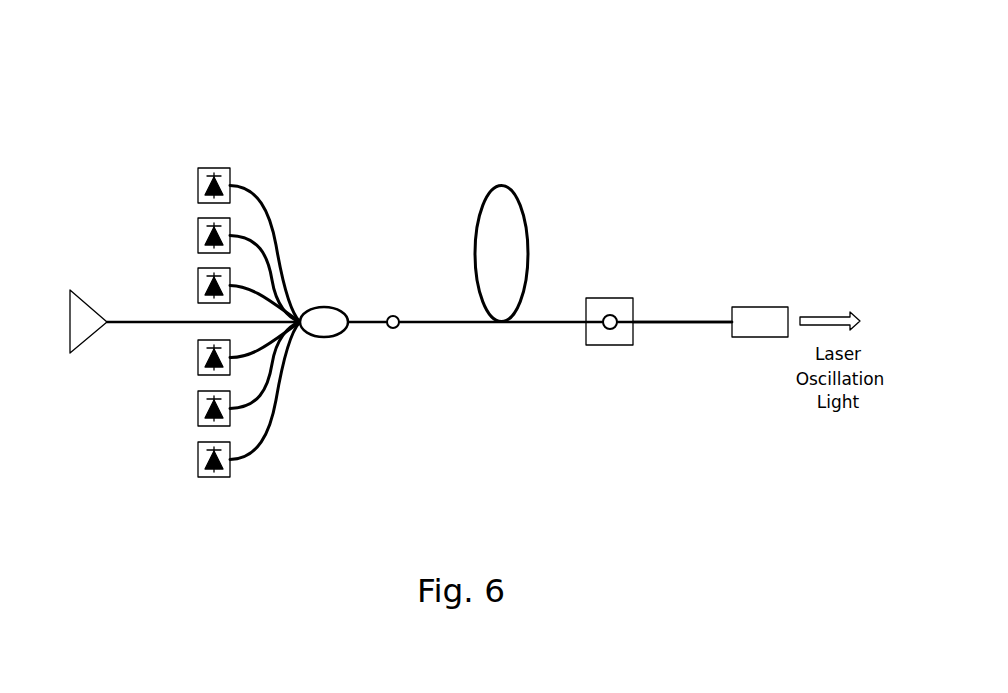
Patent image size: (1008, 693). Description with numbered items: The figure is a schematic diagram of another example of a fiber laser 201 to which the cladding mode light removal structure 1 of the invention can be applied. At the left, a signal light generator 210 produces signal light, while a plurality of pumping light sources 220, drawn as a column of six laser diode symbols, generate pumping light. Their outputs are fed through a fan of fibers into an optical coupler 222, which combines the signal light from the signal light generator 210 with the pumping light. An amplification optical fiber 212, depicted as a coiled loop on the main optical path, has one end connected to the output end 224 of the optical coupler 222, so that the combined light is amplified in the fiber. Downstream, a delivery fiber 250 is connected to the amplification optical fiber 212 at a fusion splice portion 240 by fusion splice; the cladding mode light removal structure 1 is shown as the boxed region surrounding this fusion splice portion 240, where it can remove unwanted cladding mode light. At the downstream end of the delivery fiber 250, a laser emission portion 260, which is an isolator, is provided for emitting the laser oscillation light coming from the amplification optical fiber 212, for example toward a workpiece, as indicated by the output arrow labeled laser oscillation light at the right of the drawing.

The fiber laser 201 is at (657, 165).
The signal light generator 210 is at (93, 306).
The pumping light sources 220 is at (213, 167).
The optical coupler 222 is at (322, 338).
The output end 224 is at (393, 329).
The amplification optical fiber 212 is at (485, 195).
The cladding mode light removal structure 1 is at (610, 297).
The fusion splice portion 240 is at (610, 329).
The delivery fiber 250 is at (688, 325).
The laser emission portion 260 is at (760, 337).